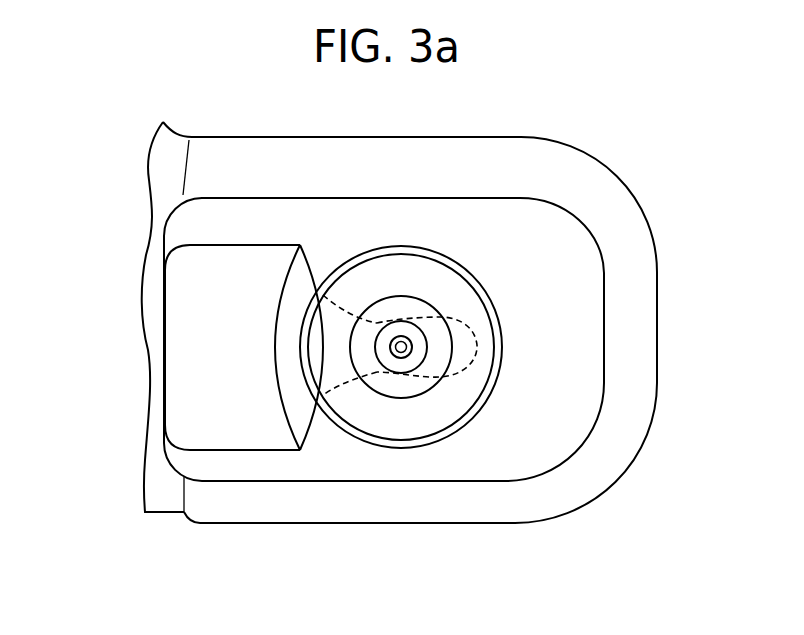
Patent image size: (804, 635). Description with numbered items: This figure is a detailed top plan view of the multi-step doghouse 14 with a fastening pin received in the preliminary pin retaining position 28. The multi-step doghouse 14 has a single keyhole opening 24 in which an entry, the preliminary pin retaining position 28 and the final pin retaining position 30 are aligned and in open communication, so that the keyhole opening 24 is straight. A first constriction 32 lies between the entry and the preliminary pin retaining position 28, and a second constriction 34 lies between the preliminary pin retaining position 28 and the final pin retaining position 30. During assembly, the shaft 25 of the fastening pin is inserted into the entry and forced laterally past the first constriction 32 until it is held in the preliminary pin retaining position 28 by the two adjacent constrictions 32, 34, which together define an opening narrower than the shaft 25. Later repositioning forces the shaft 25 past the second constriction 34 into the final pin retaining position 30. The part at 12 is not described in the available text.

The strap 12 is at (160, 503).
The multi-step doghouse 14 is at (630, 139).
The keyhole opening 24 is at (304, 364).
The shaft 25 is at (377, 363).
The preliminary pin retaining position 28 is at (403, 318).
The final pin retaining position 30 is at (460, 348).
The first constriction 32 is at (377, 323).
The second constriction 34 is at (433, 373).